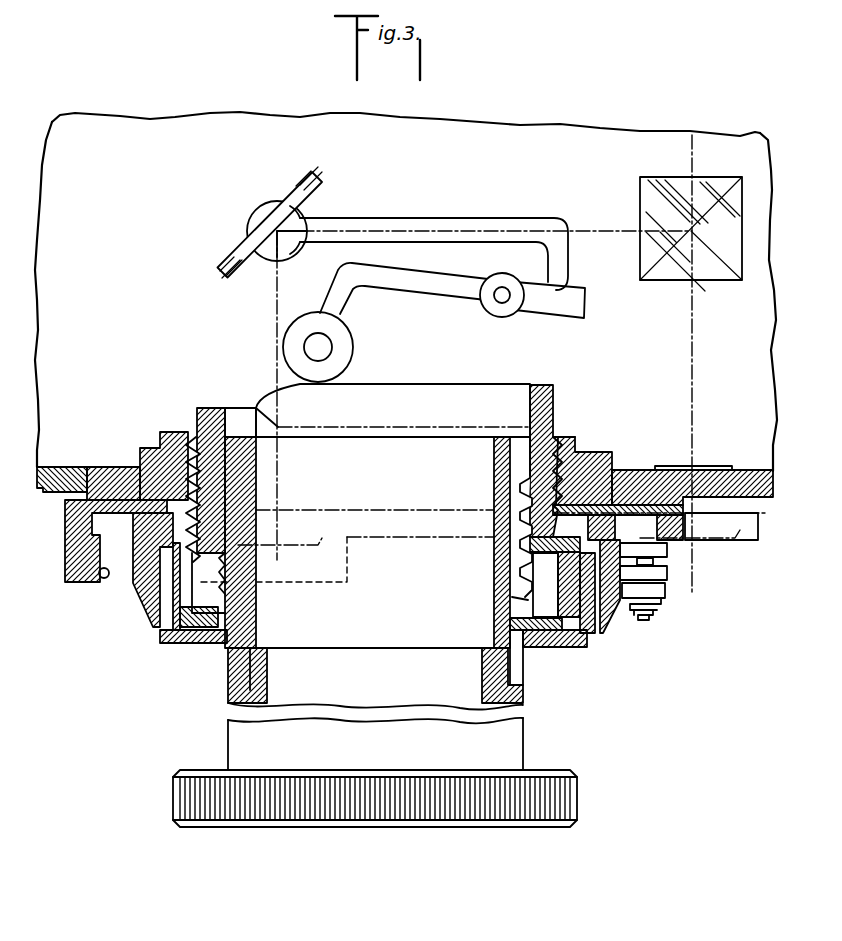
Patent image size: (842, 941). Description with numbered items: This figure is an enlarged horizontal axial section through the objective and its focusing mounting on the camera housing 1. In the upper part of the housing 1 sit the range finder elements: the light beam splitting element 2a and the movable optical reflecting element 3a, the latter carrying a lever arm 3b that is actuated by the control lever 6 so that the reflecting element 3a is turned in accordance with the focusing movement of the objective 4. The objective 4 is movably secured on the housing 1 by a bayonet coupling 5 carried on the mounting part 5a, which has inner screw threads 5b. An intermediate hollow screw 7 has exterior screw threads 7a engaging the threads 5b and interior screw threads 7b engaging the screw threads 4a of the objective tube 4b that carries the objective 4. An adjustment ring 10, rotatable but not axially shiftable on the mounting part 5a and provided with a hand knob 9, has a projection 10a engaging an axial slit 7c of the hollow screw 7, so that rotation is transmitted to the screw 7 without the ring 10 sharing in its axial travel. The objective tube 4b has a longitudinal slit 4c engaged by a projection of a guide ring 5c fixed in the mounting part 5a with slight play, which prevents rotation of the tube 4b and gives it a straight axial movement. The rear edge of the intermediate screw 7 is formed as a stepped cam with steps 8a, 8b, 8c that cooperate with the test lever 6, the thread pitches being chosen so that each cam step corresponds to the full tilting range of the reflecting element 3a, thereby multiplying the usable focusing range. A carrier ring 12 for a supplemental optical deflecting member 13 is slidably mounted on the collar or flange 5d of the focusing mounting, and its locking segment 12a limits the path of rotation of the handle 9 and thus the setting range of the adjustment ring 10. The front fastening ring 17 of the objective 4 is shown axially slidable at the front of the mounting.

The camera housing 1 is at (43, 492).
The optical light beam splitting element 2a is at (655, 202).
The movable optical reflecting element 3a is at (235, 262).
The lever arm 3b is at (443, 220).
The objective 4 is at (235, 733).
The screw threads 4a is at (494, 512).
The objective tube 4b is at (520, 586).
The longitudinal slit 4c is at (518, 601).
The bayonet coupling 5 is at (583, 436).
The mounting part 5a is at (612, 500).
The inner screw threads 5b is at (573, 498).
The guide ring 5c is at (538, 633).
The collar or flange 5d is at (90, 468).
The control lever 6 is at (343, 337).
The intermediate hollow screw 7 is at (200, 420).
The exterior screw threads 7a is at (555, 437).
The interior screw threads 7b is at (530, 455).
The axial slit 7c is at (530, 548).
The cam step 8a is at (240, 407).
The cam step 8b is at (470, 384).
The cam step 8c is at (345, 425).
The hand knob 9 is at (655, 592).
The adjustment ring 10 is at (138, 584).
The projection 10a is at (548, 547).
The carrier ring 12 is at (65, 520).
The locking segment 12a is at (105, 585).
The supplemental optical deflecting member 13 is at (720, 543).
The front fastening ring 17 is at (200, 793).